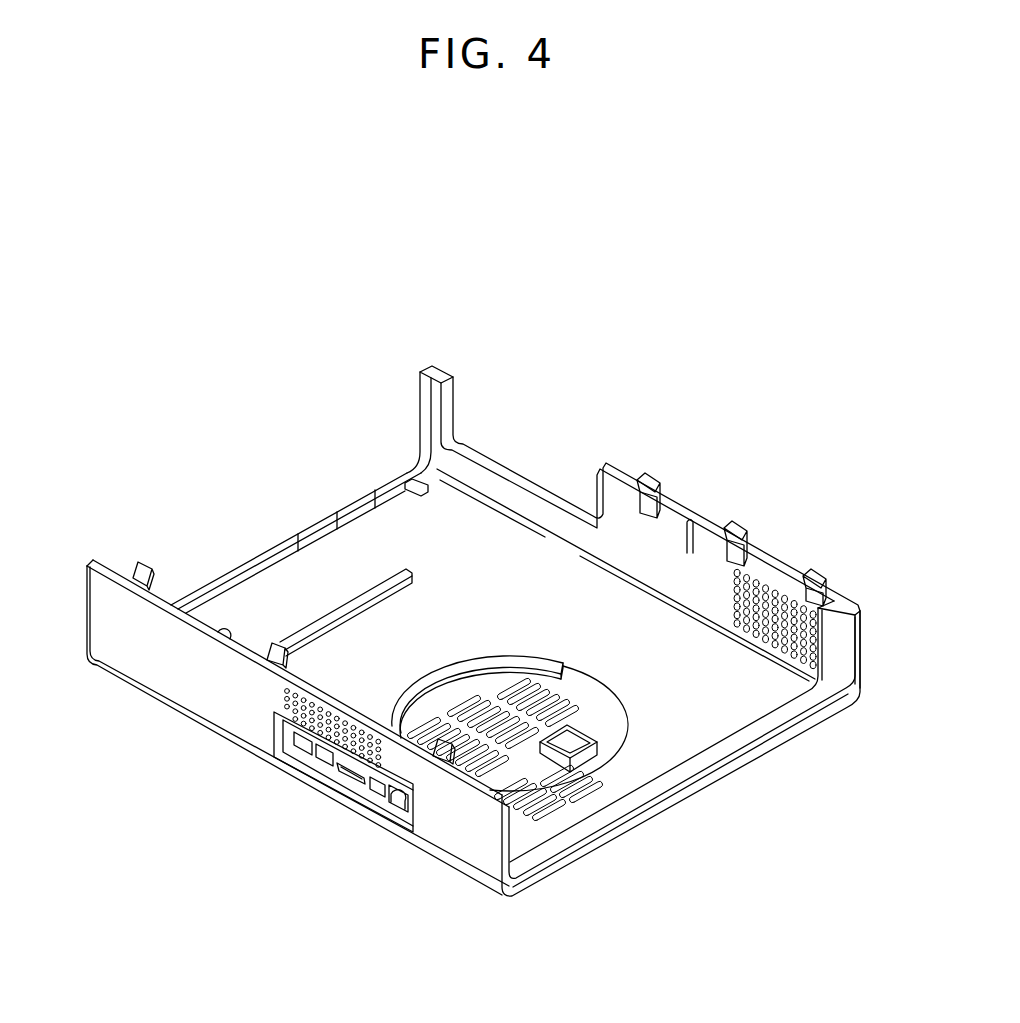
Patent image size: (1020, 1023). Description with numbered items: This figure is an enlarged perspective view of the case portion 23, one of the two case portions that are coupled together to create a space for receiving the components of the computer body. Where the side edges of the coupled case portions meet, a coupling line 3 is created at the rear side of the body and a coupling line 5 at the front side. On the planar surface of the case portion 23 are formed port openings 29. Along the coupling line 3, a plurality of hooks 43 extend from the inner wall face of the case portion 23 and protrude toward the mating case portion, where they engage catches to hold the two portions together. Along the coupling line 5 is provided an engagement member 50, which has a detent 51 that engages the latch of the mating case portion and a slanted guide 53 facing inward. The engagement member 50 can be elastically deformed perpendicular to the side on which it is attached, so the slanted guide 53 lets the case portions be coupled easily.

The coupling line 3 is at (214, 633).
The coupling line 5 is at (768, 554).
The case portion 23 is at (648, 468).
The port openings 29 is at (316, 766).
The hooks 43 is at (137, 586).
The engagement member 50 is at (868, 604).
The detent 51 is at (827, 593).
The slanted guide 53 is at (805, 573).